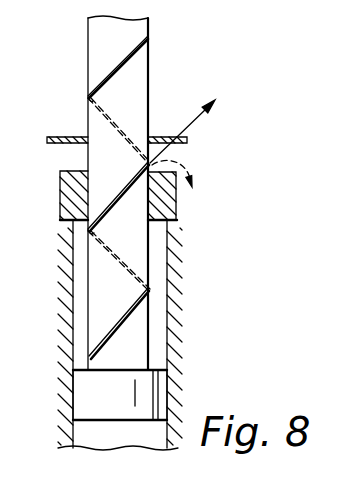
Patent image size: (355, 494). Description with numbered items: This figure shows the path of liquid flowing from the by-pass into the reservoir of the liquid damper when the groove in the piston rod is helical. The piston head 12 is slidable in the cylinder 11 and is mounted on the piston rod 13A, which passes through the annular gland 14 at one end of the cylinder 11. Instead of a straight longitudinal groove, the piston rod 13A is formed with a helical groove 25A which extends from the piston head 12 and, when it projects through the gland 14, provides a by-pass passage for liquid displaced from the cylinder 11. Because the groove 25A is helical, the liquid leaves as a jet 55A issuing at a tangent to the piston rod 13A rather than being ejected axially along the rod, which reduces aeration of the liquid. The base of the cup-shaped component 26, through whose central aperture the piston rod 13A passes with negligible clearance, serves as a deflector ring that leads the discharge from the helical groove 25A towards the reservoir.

The piston rod 13A is at (137, 92).
The helical groove 25A is at (131, 326).
The cup-shaped component 26 is at (60, 136).
The annular gland 14 is at (76, 200).
The cylinder 11 is at (170, 297).
The piston head 12 is at (86, 391).
The jet 55A is at (190, 126).